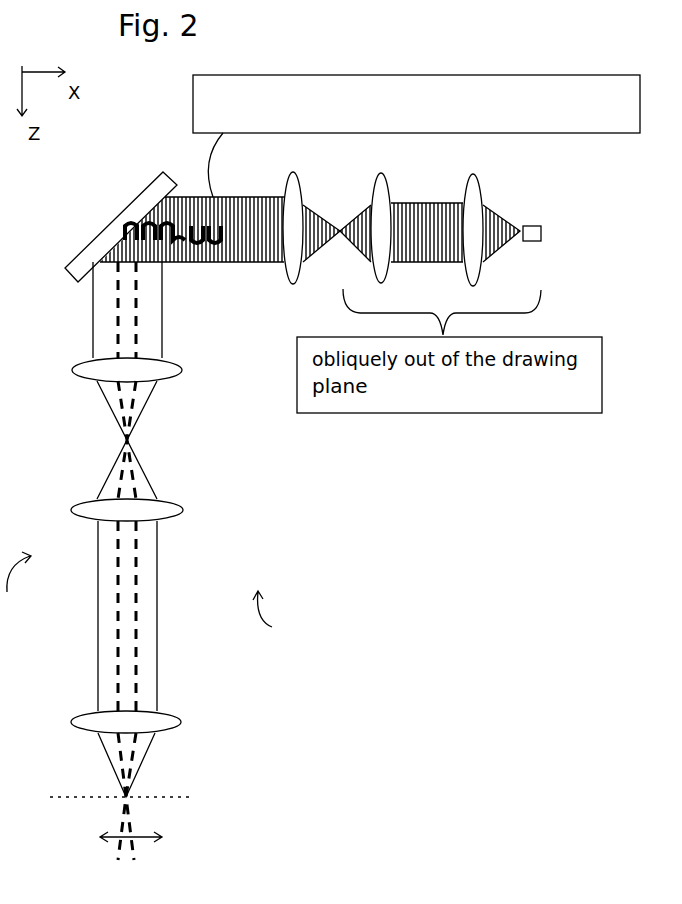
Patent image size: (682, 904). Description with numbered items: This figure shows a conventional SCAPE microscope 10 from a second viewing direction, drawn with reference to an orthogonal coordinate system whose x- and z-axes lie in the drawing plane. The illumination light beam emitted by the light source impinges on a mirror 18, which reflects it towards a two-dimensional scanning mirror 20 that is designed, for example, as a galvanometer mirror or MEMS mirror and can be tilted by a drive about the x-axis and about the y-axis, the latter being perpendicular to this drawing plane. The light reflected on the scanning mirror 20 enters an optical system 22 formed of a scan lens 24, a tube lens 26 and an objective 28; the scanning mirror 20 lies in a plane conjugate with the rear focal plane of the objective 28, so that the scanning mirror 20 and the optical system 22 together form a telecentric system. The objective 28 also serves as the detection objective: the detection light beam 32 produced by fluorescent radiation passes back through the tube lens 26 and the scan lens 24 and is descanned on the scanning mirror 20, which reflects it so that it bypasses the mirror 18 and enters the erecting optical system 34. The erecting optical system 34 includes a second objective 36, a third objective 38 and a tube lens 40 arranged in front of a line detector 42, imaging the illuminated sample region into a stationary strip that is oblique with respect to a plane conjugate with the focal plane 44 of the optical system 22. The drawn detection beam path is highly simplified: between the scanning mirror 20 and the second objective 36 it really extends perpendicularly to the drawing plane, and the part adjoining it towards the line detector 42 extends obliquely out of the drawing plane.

The SCAPE microscope 10 is at (277, 614).
The mirror 18 is at (233, 264).
The scanning mirror 20 is at (158, 174).
The optical system 22 is at (25, 577).
The scan lens 24 is at (183, 372).
The tube lens 26 is at (183, 512).
The objective 28 is at (181, 727).
The detection light beam 32 is at (160, 640).
The erecting optical system 34 is at (434, 160).
The second objective 36 is at (297, 284).
The third objective 38 is at (388, 278).
The tube lens 40 is at (482, 279).
The line detector 42 is at (535, 227).
The focal plane 44 is at (208, 782).